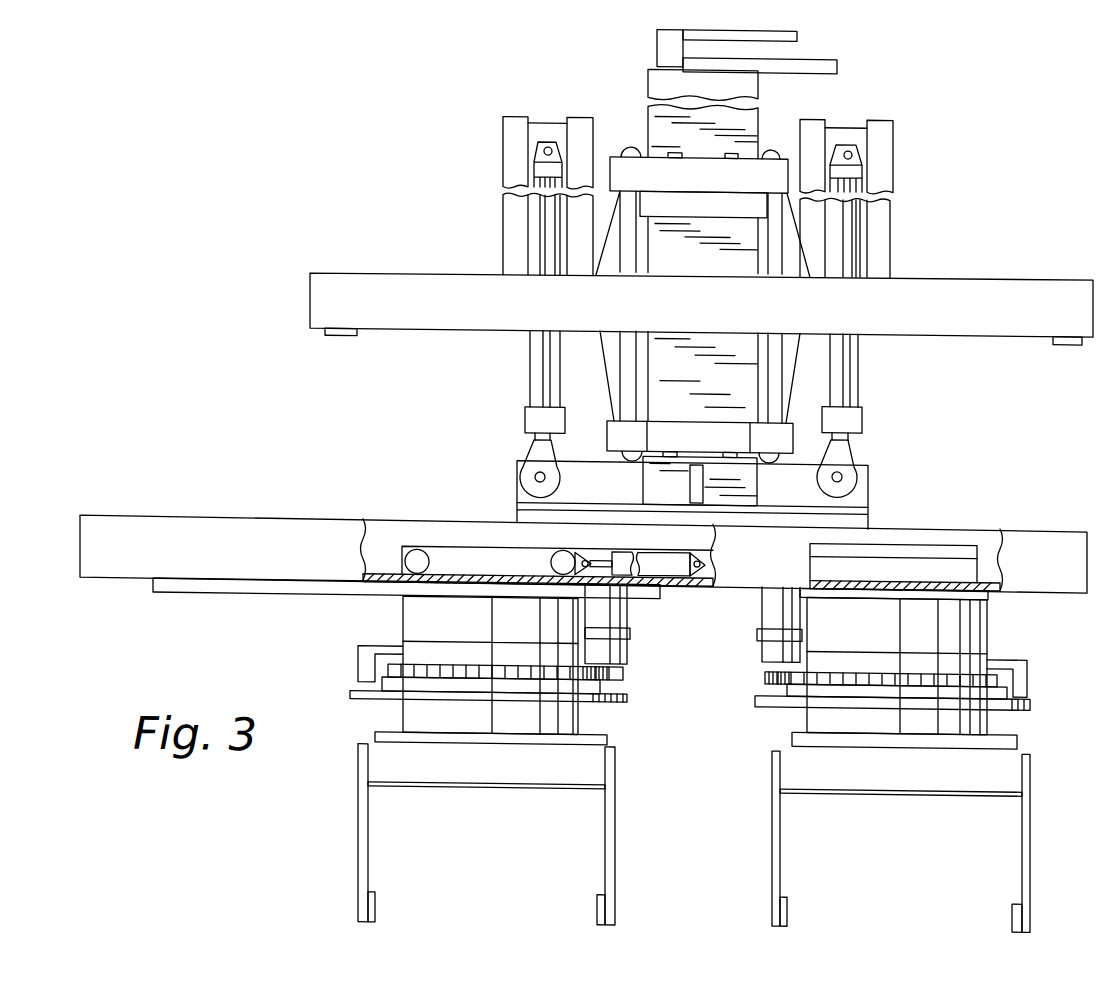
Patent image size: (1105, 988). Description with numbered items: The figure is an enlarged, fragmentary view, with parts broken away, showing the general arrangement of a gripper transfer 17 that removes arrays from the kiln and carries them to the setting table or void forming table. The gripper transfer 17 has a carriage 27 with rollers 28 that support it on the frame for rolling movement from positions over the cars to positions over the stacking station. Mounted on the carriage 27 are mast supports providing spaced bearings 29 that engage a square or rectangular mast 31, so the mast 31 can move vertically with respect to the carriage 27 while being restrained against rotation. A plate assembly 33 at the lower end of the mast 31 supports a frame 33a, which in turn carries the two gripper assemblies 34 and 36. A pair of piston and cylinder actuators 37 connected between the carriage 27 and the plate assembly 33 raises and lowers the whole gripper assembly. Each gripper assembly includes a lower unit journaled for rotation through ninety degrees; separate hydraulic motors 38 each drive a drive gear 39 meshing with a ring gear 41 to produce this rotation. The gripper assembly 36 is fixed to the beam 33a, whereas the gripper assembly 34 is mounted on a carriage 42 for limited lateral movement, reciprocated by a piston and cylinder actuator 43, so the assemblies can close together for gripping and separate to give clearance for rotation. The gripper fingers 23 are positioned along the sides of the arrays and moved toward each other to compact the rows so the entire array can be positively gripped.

The gripper transfer 17 is at (902, 263).
The gripper fingers 23 is at (368, 858).
The carriage 27 is at (968, 277).
The rollers 28 is at (340, 332).
The spaced bearings 29 is at (629, 146).
The mast 31 is at (709, 258).
The plate assembly 33 is at (868, 489).
The frame 33a is at (920, 518).
The gripper assembly 34 is at (626, 712).
The gripper assembly 36 is at (1024, 713).
The piston and cylinder actuators 37 is at (558, 388).
The hydraulic motors 38 is at (630, 613).
The drive gear 39 is at (625, 670).
The ring gear 41 is at (440, 659).
The carriage 42 is at (505, 541).
The piston and cylinder actuator 43 is at (648, 544).